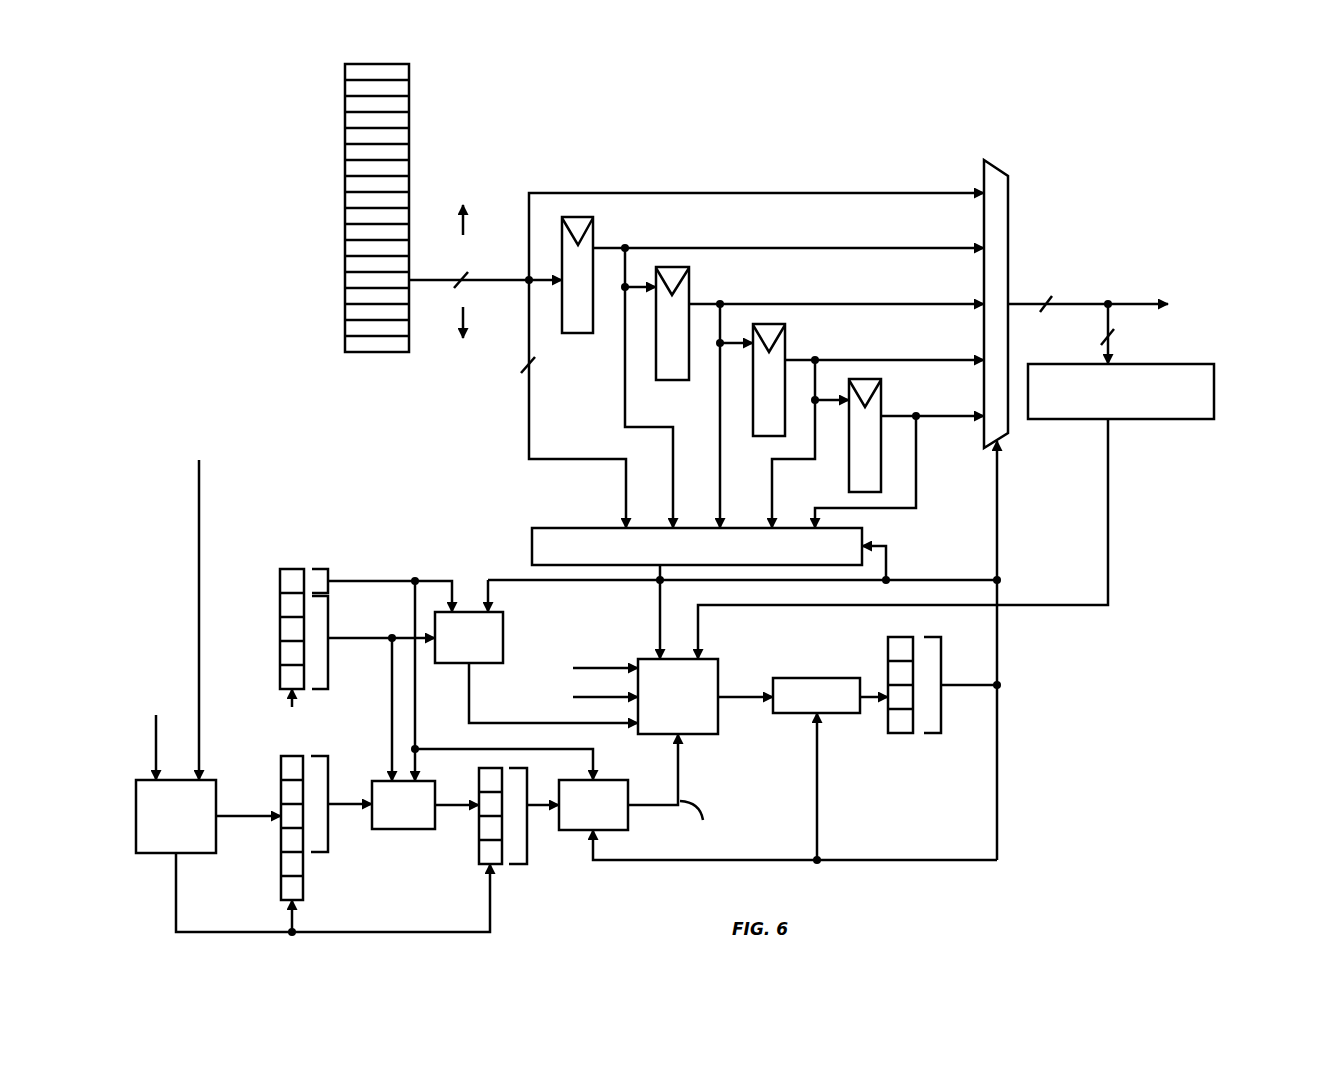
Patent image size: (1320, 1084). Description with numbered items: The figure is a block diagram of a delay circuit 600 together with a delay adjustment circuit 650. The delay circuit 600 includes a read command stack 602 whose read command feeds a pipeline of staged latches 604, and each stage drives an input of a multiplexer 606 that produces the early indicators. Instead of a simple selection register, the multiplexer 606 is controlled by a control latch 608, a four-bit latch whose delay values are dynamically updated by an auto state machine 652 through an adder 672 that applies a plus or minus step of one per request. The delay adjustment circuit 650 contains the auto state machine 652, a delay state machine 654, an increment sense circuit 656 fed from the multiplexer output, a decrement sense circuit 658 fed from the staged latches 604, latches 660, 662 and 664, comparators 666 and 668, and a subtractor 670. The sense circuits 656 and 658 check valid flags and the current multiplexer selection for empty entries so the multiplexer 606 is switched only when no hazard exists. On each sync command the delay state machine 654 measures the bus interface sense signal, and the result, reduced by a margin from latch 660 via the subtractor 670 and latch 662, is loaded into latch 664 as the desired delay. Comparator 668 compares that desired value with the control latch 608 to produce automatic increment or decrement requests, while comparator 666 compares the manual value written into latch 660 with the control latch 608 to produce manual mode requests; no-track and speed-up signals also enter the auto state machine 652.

The delay circuit 600 is at (890, 133).
The read command stack 602 is at (319, 207).
The staged latches 604 is at (595, 223).
The multiplexer 606 is at (1010, 197).
The control latch 608 is at (886, 641).
The delay adjustment circuit 650 is at (428, 485).
The auto state machine 652 is at (700, 732).
The delay state machine 654 is at (311, 673).
The increment sense circuit 656 is at (956, 511).
The decrement sense circuit 658 is at (744, 694).
The latch 660 is at (280, 574).
The latch 662 is at (281, 761).
The latch 664 is at (476, 856).
The comparator 666 is at (534, 657).
The comparator 668 is at (593, 805).
The subtractor 670 is at (425, 805).
The adder 672 is at (830, 771).